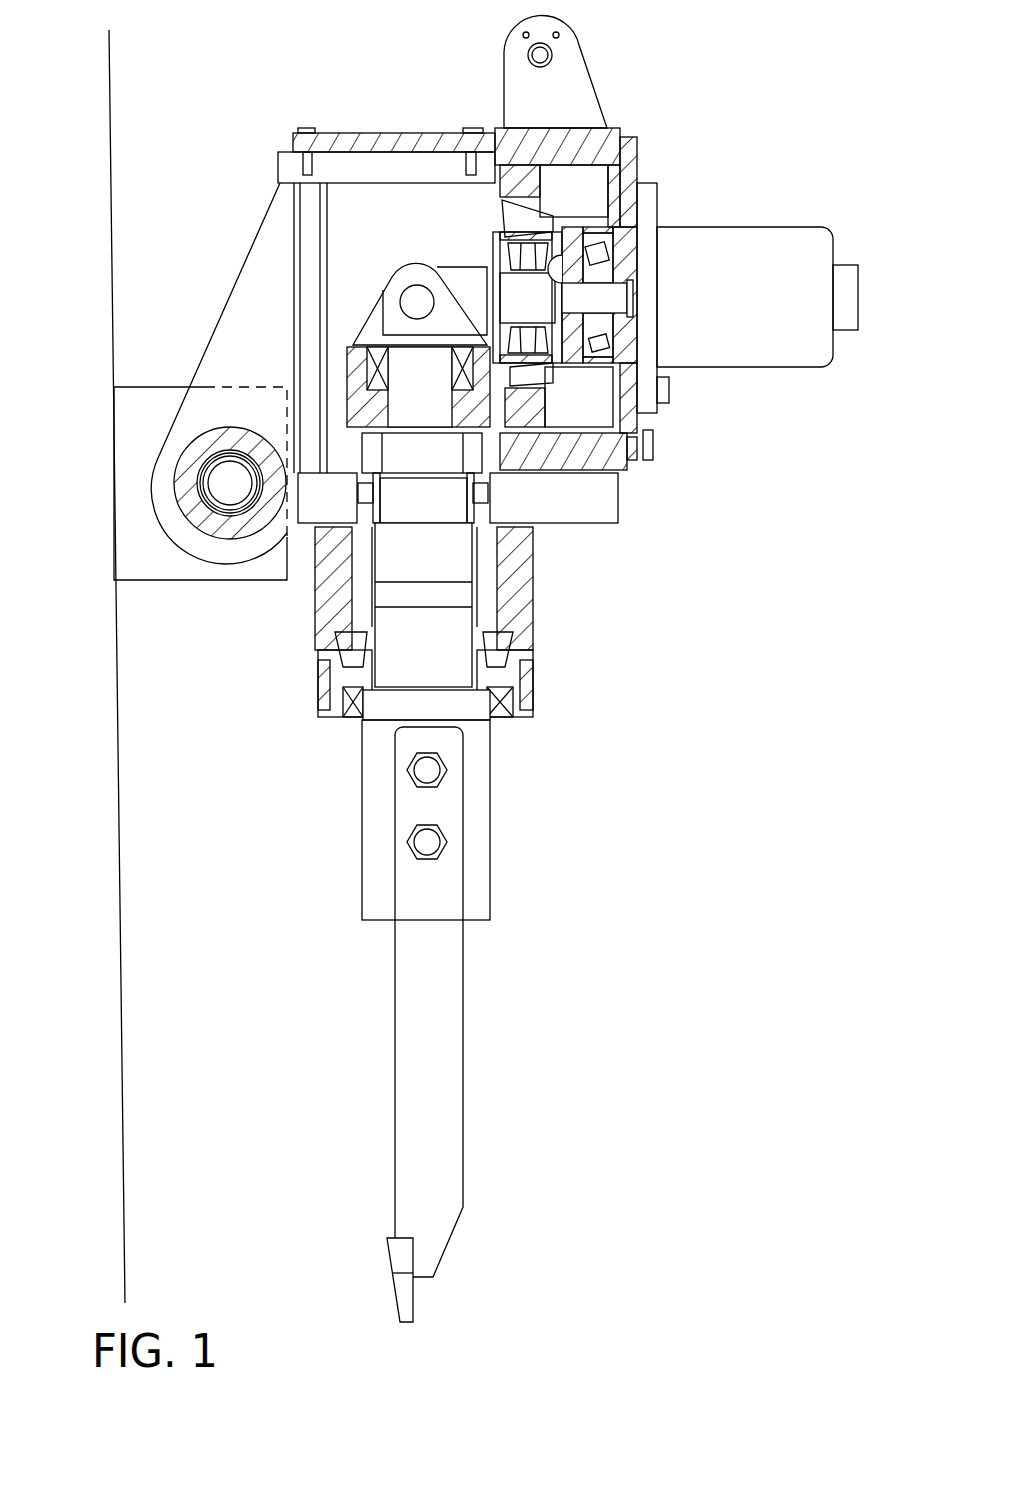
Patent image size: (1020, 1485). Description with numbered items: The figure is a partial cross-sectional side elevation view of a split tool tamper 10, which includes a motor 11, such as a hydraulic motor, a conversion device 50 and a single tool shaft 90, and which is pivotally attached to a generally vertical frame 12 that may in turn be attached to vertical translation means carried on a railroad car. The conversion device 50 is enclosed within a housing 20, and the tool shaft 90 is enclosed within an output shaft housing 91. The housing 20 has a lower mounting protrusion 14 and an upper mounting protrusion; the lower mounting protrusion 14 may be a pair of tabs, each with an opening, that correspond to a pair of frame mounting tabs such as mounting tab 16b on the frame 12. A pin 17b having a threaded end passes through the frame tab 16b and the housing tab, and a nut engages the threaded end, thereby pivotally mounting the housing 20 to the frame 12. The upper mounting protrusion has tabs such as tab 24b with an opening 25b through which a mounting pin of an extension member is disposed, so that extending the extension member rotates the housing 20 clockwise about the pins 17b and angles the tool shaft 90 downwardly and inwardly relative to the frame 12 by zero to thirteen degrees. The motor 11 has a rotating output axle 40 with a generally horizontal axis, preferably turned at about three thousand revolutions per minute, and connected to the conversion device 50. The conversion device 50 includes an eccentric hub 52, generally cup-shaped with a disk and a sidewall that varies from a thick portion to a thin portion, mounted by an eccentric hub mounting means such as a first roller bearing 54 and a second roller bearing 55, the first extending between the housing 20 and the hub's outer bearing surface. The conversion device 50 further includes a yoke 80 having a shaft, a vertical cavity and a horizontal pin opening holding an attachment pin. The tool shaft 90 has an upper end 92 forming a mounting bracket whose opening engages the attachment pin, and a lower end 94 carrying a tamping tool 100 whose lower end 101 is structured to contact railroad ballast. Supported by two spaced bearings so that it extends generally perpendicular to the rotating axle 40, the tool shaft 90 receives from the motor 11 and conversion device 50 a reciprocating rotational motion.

The split tool tamper 10 is at (262, 82).
The motor 11 is at (770, 233).
The frame 12 is at (102, 359).
The lower mounting protrusion 14 is at (245, 258).
The mounting tab 16b is at (156, 392).
The pin 17b is at (228, 498).
The housing 20 is at (492, 128).
The tab 24b is at (594, 100).
The opening 25b is at (552, 54).
The rotating output axle 40 is at (608, 295).
The conversion device 50 is at (652, 158).
The eccentric hub 52 is at (575, 365).
The first roller bearing 54 is at (533, 222).
The second roller bearing 55 is at (600, 262).
The yoke 80 is at (453, 272).
The tool shaft 90 is at (400, 627).
The output shaft housing 91 is at (530, 607).
The upper end 92 is at (368, 447).
The lower end 94 is at (375, 850).
The tamping tool 100 is at (448, 1103).
The lower end 101 is at (410, 1296).